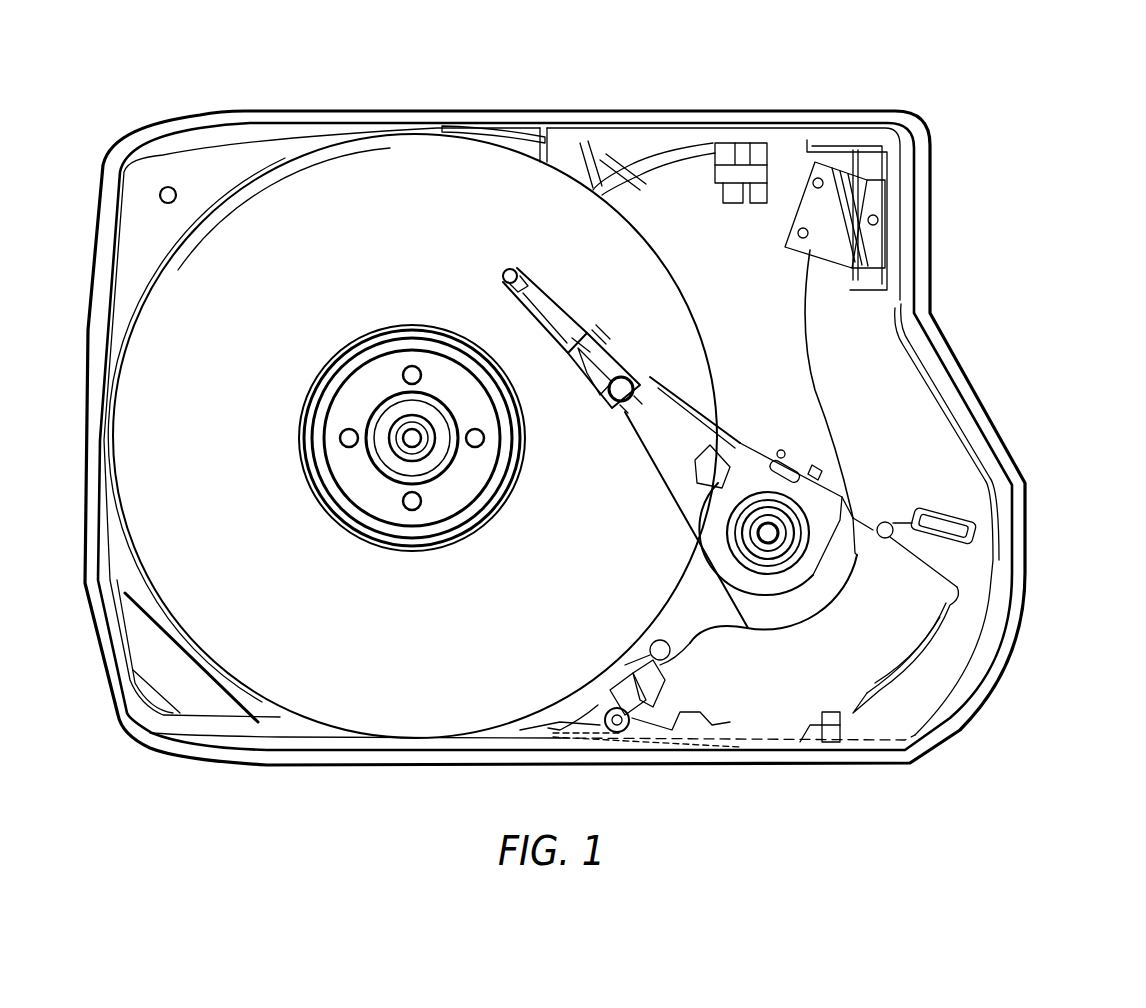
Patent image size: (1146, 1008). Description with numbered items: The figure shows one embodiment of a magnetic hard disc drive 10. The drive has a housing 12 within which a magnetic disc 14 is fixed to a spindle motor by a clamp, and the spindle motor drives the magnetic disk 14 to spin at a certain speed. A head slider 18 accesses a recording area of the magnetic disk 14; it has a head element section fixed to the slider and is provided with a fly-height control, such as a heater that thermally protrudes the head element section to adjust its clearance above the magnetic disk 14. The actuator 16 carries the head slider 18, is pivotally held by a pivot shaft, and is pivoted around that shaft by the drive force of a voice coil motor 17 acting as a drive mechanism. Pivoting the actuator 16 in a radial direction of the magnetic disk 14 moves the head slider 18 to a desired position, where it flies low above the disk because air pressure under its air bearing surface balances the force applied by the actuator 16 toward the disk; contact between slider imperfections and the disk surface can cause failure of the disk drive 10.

The magnetic hard disc drive 10 is at (1020, 178).
The housing 12 is at (924, 261).
The magnetic disc 14 is at (378, 168).
The actuator 16 is at (786, 412).
The voice coil motor 17 is at (941, 657).
The head slider 18 is at (520, 296).